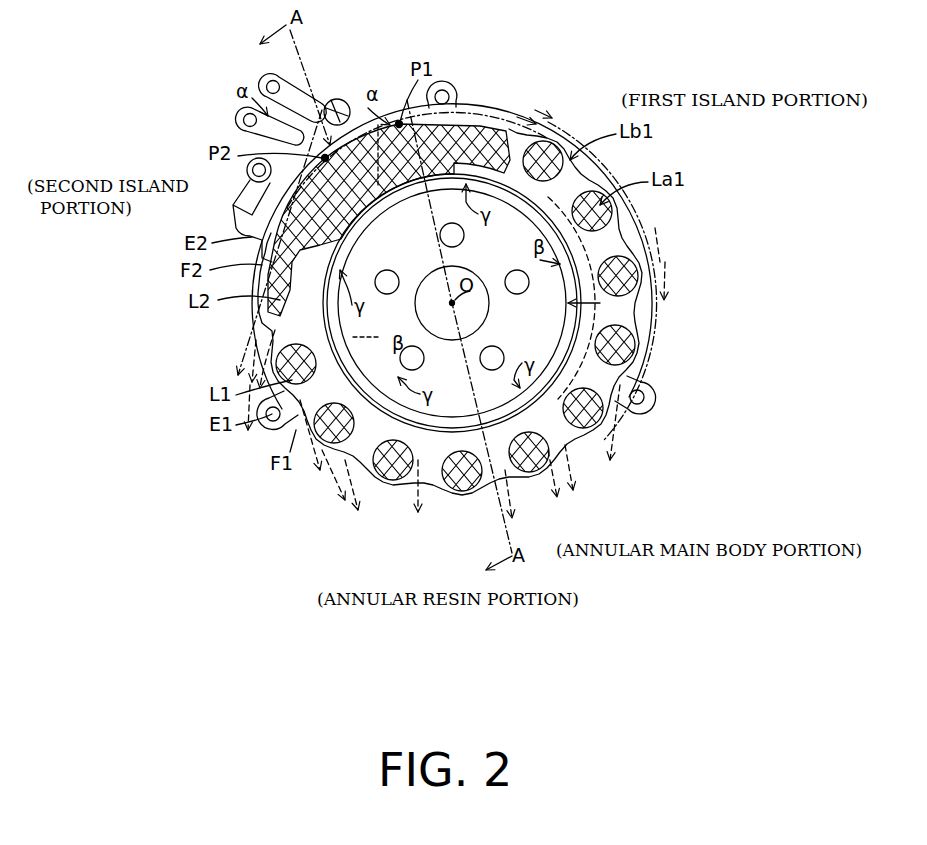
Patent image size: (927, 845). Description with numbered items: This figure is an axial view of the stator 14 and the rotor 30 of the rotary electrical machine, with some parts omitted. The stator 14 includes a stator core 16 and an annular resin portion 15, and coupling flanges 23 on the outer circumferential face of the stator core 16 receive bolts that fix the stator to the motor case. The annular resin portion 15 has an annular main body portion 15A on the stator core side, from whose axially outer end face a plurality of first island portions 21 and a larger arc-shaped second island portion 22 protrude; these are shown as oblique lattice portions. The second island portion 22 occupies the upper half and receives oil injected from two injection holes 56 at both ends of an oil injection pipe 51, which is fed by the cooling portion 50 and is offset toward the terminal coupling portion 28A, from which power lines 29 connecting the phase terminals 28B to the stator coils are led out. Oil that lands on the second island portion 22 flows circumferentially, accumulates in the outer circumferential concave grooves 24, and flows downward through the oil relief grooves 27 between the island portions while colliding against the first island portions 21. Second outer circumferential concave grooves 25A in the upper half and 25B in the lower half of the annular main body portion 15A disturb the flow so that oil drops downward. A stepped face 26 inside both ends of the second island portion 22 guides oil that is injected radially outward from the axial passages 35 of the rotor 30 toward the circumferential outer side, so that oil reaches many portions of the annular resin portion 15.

The stator 14 is at (640, 235).
The annular resin portion 15 is at (425, 492).
The annular main body portion 15A is at (588, 465).
The stator core 16 is at (472, 494).
The first island portion 21 is at (562, 142).
The second island portion 22 is at (322, 182).
The coupling flange 23 is at (462, 92).
The outer circumferential concave groove 24 is at (397, 118).
The second outer circumferential concave groove 25A is at (530, 138).
The second outer circumferential concave groove 25B is at (640, 298).
The stepped face 26 is at (483, 198).
The oil relief groove 27 is at (505, 115).
The terminal coupling portion 28A is at (236, 204).
The phase terminal 28B is at (262, 78).
The power line 29 is at (244, 128).
The rotor 30 is at (582, 318).
The axial passage 35 is at (386, 272).
The cooling portion 50 is at (333, 99).
The oil injection pipe 51 is at (343, 100).
The injection hole 56 is at (300, 100).